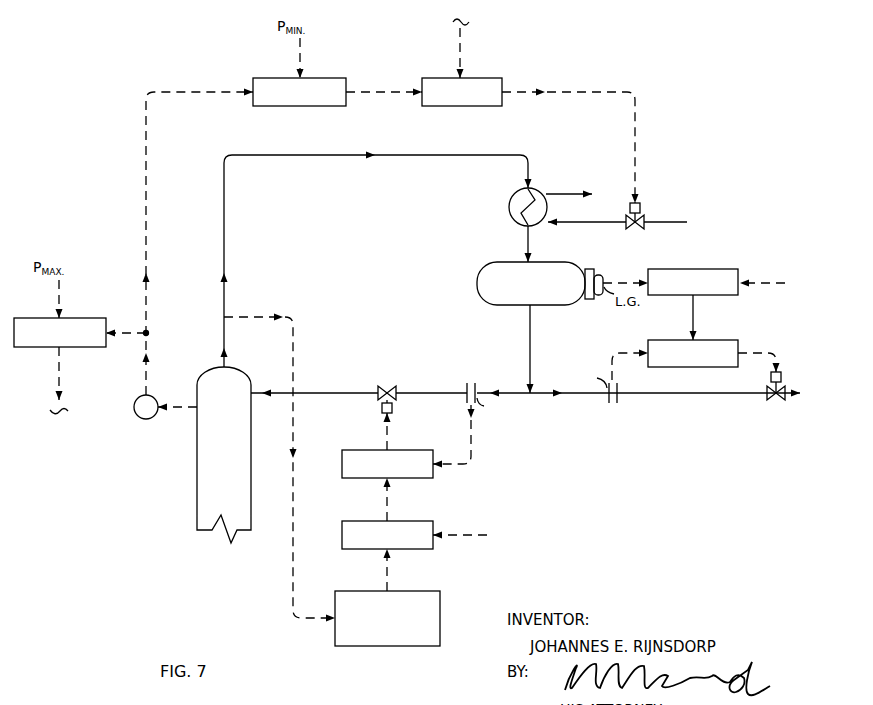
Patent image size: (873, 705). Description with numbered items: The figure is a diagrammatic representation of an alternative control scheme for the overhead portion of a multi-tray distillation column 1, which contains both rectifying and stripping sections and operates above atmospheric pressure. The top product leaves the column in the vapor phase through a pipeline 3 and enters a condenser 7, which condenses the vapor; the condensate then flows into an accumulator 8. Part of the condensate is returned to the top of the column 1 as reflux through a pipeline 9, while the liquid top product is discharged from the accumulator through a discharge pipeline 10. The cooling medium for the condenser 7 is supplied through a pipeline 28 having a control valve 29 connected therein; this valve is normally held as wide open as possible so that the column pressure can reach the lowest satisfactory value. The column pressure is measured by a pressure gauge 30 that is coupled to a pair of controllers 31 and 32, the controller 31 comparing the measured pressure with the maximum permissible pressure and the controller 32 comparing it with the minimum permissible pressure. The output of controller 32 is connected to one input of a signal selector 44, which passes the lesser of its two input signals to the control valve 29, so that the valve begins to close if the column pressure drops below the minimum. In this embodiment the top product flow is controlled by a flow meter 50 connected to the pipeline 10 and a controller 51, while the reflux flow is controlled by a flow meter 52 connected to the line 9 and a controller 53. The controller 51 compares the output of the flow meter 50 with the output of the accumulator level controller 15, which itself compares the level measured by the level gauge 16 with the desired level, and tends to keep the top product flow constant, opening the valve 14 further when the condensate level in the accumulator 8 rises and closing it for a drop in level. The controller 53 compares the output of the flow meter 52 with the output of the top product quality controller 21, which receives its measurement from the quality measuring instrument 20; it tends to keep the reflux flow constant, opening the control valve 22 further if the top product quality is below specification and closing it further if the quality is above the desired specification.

The distillation column 1 is at (230, 507).
The pipeline 3 is at (288, 155).
The condenser 7 is at (511, 197).
The accumulator 8 is at (507, 262).
The pipeline 9 is at (325, 391).
The discharge pipeline 10 is at (594, 398).
The controllable valve 14 is at (772, 401).
The controller 15 is at (713, 269).
The level gauge 16 is at (603, 278).
The quality measuring instrument 20 is at (407, 591).
The controller 21 is at (404, 521).
The control valve 22 is at (384, 386).
The pipeline 28 is at (572, 222).
The control valve 29 is at (638, 230).
The pressure gauge 30 is at (146, 419).
The controller 31 is at (76, 318).
The controller 32 is at (311, 79).
The signal selector 44 is at (463, 106).
The flow meter 50 is at (622, 400).
The controller 51 is at (712, 340).
The flow meter 52 is at (465, 385).
The controller 53 is at (404, 450).